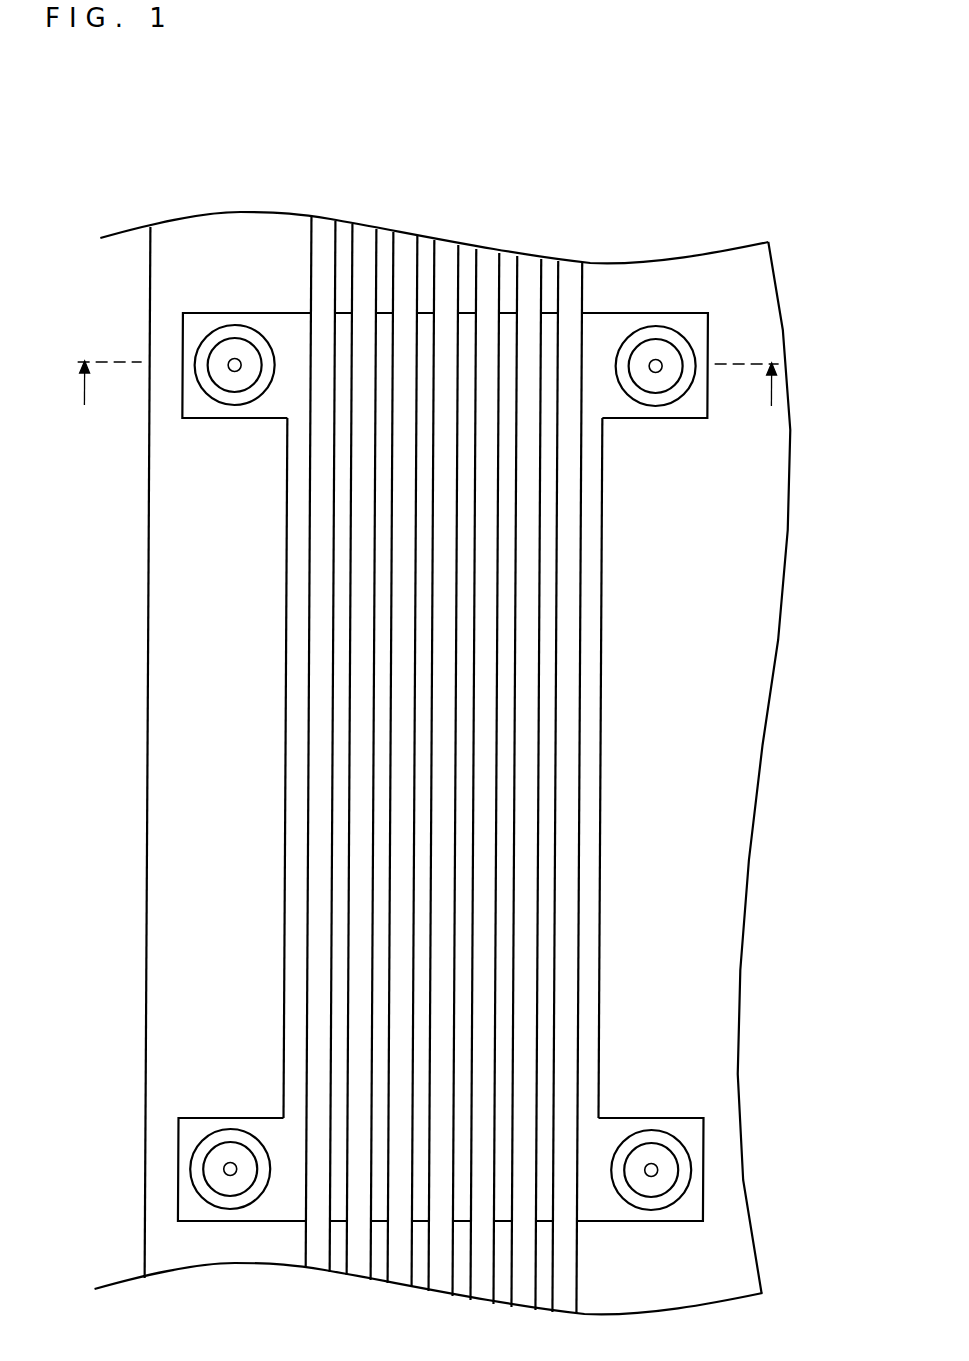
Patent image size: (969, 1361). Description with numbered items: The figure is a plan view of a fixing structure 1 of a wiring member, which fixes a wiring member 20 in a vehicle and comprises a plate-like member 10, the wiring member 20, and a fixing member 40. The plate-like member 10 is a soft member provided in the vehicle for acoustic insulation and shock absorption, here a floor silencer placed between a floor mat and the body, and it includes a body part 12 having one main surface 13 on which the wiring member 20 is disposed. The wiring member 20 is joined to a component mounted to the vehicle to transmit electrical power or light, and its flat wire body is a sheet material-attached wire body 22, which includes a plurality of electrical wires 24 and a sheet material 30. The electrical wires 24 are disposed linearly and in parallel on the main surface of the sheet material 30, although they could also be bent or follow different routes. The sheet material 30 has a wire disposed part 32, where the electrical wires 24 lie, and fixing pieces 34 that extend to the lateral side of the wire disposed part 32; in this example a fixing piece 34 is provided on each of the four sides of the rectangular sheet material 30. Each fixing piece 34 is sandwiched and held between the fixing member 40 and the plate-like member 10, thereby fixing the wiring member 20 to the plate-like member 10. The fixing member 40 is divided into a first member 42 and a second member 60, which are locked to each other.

The fixing structure of the wiring member 1 is at (140, 131).
The plate-like member 10 is at (143, 635).
The body part 12 is at (750, 760).
The one main surface 13 is at (172, 753).
The wiring member 20 is at (525, 765).
The sheet material-attached wire body 22 is at (658, 505).
The electrical wire 24 is at (528, 570).
The sheet material 30 is at (593, 522).
The wire disposed part 32 is at (295, 787).
The fixing piece 34 is at (258, 406).
The fixing member 40 is at (236, 326).
The first member 42 is at (700, 1158).
The second member 60 is at (690, 1179).